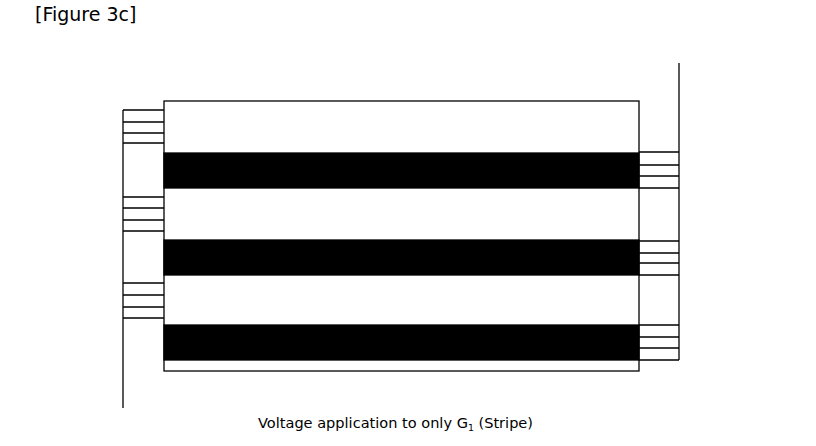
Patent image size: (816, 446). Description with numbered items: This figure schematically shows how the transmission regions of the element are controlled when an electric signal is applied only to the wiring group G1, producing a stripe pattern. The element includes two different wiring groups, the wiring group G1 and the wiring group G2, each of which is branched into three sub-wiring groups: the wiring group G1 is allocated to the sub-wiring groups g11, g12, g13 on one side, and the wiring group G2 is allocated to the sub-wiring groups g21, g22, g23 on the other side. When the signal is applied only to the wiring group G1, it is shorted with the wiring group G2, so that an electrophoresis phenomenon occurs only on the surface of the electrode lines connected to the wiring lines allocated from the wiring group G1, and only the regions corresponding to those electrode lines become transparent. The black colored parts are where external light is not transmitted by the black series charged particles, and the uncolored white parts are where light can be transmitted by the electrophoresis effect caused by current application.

The wiring group G1 is at (104, 257).
The wiring group G2 is at (699, 213).
The sub-wiring group g11 is at (118, 106).
The sub-wiring group g12 is at (118, 193).
The sub-wiring group g13 is at (124, 300).
The sub-wiring group g21 is at (684, 149).
The sub-wiring group g22 is at (684, 238).
The sub-wiring group g23 is at (678, 343).